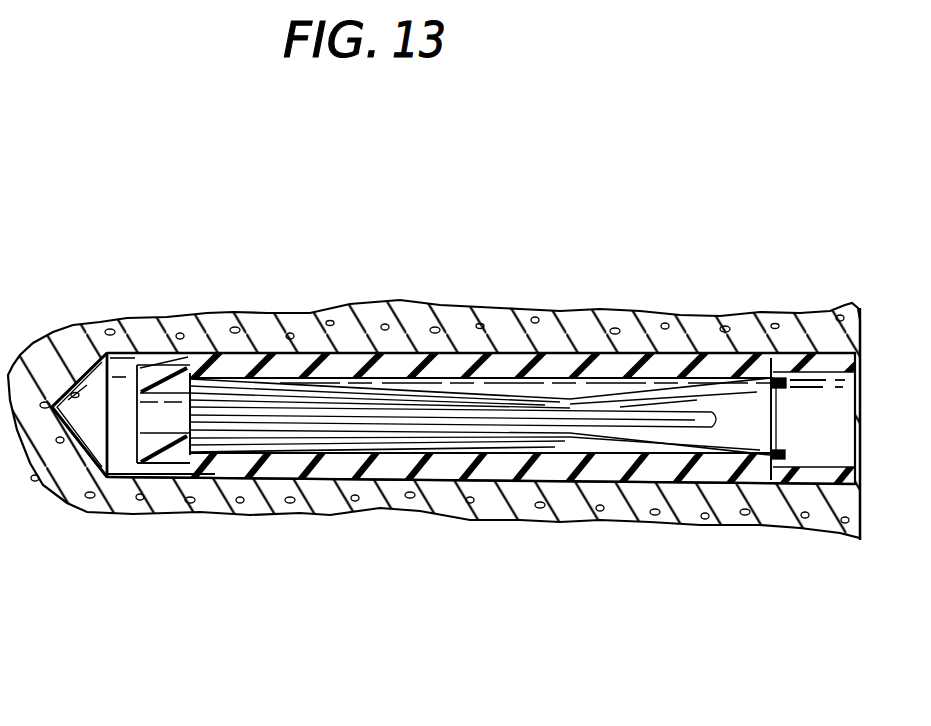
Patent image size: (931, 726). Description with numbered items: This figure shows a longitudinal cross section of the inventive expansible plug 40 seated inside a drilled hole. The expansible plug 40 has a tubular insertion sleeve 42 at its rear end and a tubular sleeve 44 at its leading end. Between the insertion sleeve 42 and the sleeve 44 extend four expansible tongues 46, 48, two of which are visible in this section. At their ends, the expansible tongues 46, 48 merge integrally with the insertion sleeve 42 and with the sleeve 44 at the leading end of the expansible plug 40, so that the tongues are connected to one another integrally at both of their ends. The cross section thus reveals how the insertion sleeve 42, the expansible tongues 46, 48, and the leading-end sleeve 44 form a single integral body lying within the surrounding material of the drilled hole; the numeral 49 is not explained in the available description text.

The expansible plug 40 is at (587, 297).
The insertion sleeve 42 is at (805, 356).
The sleeve at the leading end 44 is at (171, 372).
The expansible tongue 46 is at (550, 440).
The expansible tongue 48 is at (325, 470).
The tapered fiber bundle 49 is at (455, 440).